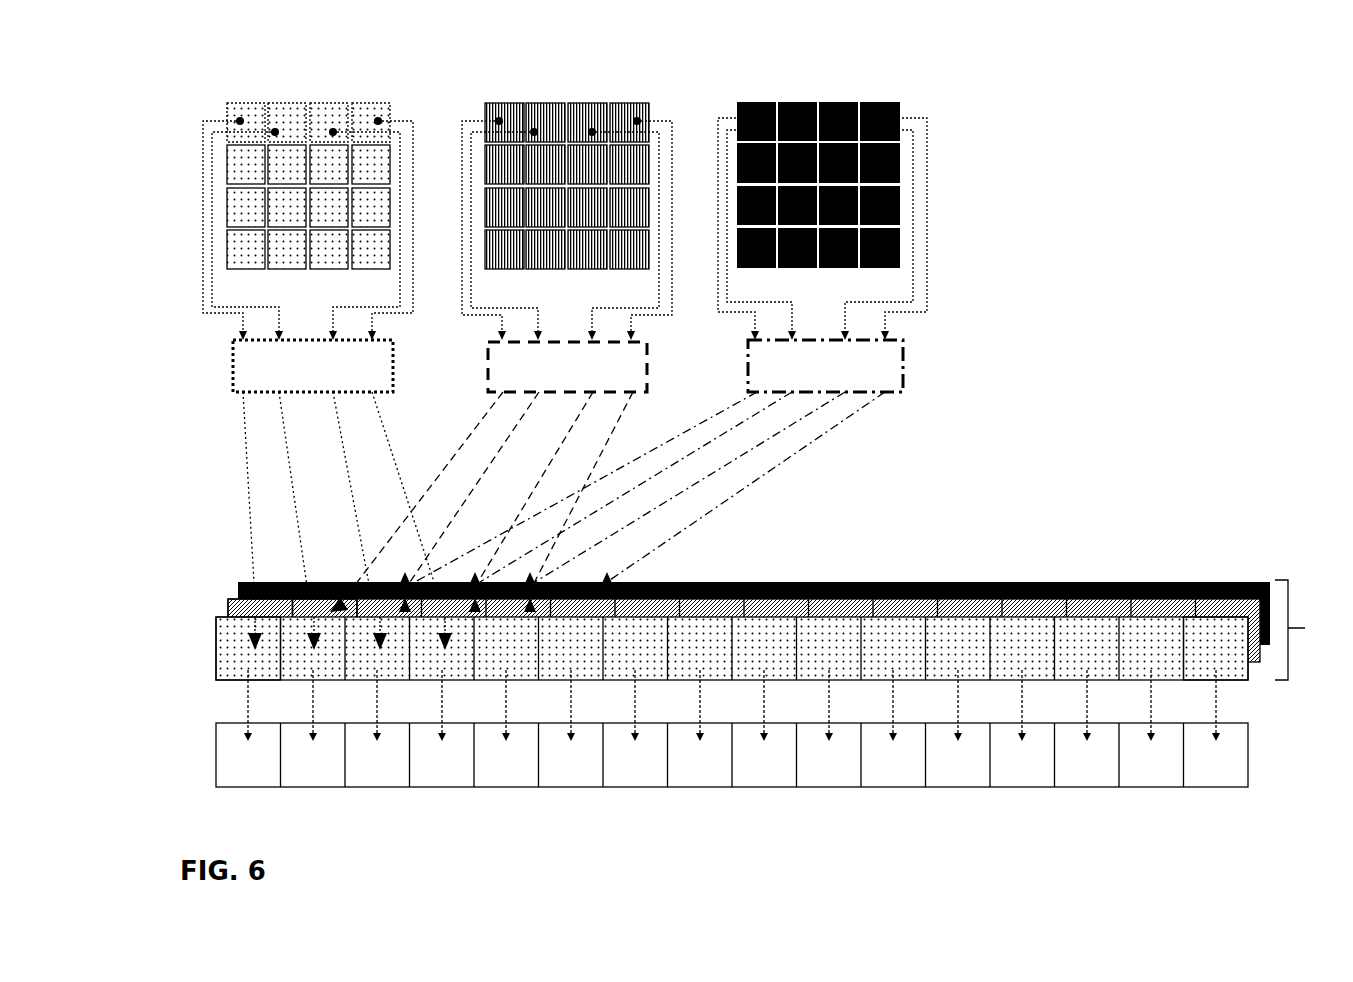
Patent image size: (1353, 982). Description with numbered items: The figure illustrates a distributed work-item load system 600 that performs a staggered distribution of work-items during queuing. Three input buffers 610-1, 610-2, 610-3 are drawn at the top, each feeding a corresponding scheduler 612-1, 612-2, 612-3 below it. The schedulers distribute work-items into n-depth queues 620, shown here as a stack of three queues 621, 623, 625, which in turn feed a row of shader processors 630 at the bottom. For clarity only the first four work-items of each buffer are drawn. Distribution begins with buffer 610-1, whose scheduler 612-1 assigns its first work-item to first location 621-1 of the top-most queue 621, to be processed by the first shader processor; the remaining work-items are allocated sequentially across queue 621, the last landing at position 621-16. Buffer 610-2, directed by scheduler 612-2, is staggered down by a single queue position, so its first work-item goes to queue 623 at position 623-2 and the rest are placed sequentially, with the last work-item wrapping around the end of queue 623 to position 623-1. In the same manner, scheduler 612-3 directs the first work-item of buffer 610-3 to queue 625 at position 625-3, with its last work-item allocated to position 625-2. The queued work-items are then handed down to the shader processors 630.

The distributed work-item load system 600 is at (1306, 73).
The input buffer 610-1 is at (230, 202).
The input buffer 610-2 is at (490, 270).
The input buffer 610-3 is at (748, 268).
The scheduler 612-1 is at (233, 357).
The scheduler 612-2 is at (488, 360).
The scheduler 612-3 is at (748, 362).
The n-depth queues 620 is at (719, 572).
The queue 621 is at (725, 679).
The first location 621-1 is at (218, 683).
The position 621-16 is at (1227, 670).
The queue 623 is at (688, 551).
The position 623-1 is at (262, 598).
The position 623-2 is at (322, 598).
The queue 625 is at (706, 524).
The position 625-2 is at (340, 583).
The position 625-3 is at (387, 585).
The shader processors 630 is at (1208, 787).